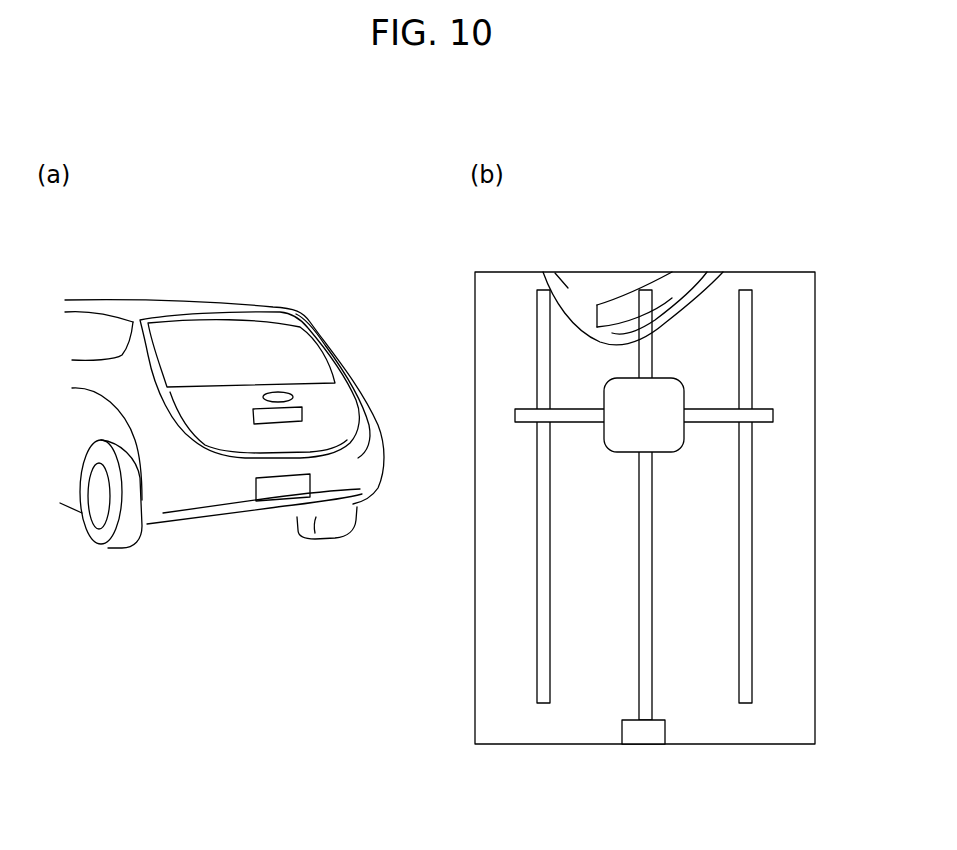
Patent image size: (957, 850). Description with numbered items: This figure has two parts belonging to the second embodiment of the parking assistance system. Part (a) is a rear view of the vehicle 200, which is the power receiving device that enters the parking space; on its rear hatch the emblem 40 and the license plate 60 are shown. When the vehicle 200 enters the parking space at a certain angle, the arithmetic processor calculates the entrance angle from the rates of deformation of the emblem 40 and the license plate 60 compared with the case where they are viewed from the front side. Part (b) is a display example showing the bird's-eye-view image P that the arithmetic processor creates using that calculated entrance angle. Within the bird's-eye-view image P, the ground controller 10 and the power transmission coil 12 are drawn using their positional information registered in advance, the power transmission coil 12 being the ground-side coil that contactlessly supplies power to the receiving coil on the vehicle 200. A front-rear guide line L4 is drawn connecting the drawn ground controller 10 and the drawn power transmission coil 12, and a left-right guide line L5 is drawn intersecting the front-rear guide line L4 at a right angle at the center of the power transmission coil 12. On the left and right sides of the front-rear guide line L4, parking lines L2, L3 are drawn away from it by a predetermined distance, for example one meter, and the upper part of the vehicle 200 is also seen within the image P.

The vehicle 200 is at (173, 303).
The emblem 40 is at (290, 414).
The license plate 60 is at (270, 490).
The bird's-eye-view image P is at (798, 293).
The parking line L2 is at (548, 583).
The parking line L3 is at (742, 587).
The front-rear guide line L4 is at (643, 652).
The left-right guide line L5 is at (763, 413).
The power transmission coil 12 is at (670, 443).
The ground controller 10 is at (645, 735).